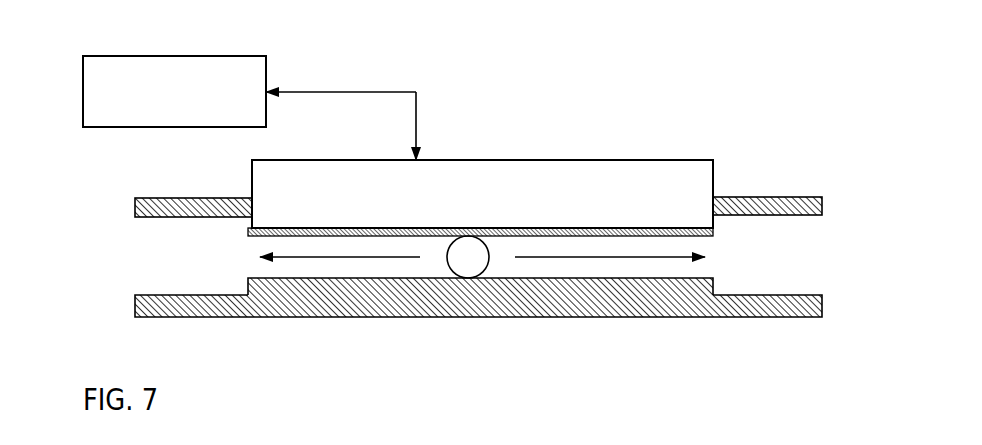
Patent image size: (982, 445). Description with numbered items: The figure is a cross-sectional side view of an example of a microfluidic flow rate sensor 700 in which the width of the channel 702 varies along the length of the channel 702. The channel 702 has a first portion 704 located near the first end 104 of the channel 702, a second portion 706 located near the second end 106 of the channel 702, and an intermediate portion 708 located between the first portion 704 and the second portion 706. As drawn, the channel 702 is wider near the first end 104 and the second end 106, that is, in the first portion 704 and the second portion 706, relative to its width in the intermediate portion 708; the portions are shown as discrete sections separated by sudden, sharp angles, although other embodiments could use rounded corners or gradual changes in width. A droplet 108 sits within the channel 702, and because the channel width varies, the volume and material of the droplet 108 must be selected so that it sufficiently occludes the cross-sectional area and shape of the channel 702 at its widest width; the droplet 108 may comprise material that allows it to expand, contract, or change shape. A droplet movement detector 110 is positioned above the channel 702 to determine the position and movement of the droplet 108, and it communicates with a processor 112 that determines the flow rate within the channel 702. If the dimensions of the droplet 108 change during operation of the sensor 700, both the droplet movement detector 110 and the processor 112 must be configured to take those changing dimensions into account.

The microfluidic flow rate sensor 700 is at (718, 112).
The processor 112 is at (174, 91).
The droplet movement detector 110 is at (610, 160).
The channel 702 is at (670, 230).
The first end 104 is at (135, 215).
The second end 106 is at (822, 212).
The droplet 108 is at (468, 278).
The first portion 704 is at (193, 318).
The second portion 706 is at (780, 298).
The intermediate portion 708 is at (350, 300).